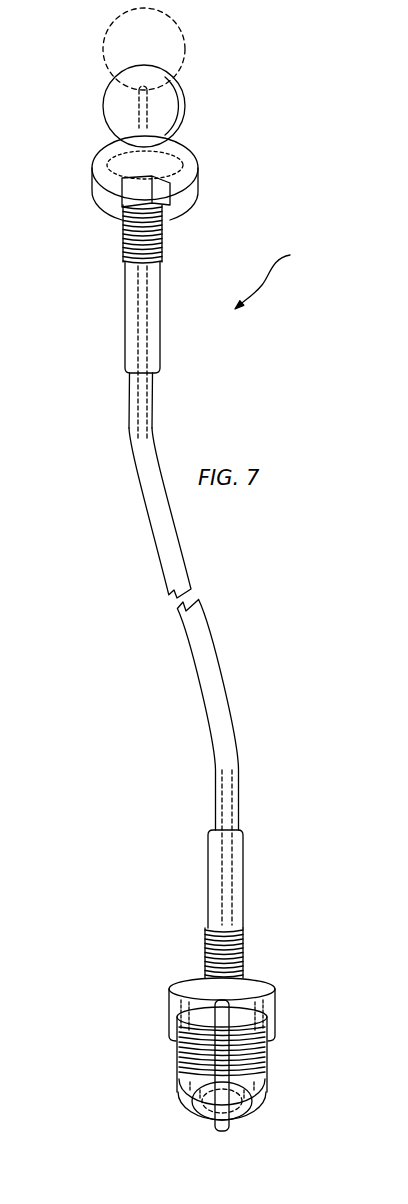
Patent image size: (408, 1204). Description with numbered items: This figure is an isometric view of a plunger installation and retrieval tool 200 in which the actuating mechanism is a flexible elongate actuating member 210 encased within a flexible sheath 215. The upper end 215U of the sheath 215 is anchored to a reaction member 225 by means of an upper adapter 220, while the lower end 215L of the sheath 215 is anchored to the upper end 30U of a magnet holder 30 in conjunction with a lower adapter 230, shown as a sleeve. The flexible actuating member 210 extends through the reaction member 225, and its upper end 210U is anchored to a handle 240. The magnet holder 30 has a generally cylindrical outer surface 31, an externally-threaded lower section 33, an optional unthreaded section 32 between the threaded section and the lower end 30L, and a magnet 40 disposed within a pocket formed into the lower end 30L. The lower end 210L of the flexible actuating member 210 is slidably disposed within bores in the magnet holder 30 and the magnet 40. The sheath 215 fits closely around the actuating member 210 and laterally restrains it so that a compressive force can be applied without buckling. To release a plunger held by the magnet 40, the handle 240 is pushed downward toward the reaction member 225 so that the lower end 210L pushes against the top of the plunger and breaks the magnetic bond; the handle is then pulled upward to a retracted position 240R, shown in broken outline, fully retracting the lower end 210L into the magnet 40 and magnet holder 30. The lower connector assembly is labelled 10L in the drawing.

The plunger installation and retrieval tool 200 is at (283, 275).
The retracted position 240R is at (187, 47).
The handle 240 is at (112, 103).
The upper end of flexible actuating member 210U is at (161, 110).
The reaction member 225 is at (197, 172).
The upper adapter 220 is at (124, 313).
The flexible elongate actuating member 210 is at (152, 413).
The upper end of sheath 215U is at (128, 377).
The flexible sheath 215 is at (192, 645).
The lower end of sheath 215L is at (208, 825).
The lower adapter 230 is at (214, 885).
The lower connector 10L is at (262, 986).
The upper end of magnet holder 30U is at (170, 996).
The cylindrical outer surface 31 is at (274, 1010).
The magnet holder 30 is at (270, 1024).
The externally-threaded lower section 33 is at (175, 1040).
The unthreaded section 32 is at (265, 1077).
The lower end of magnet holder 30L is at (178, 1092).
The magnet 40 is at (245, 1117).
The lower end of flexible actuating member 210L is at (211, 1112).